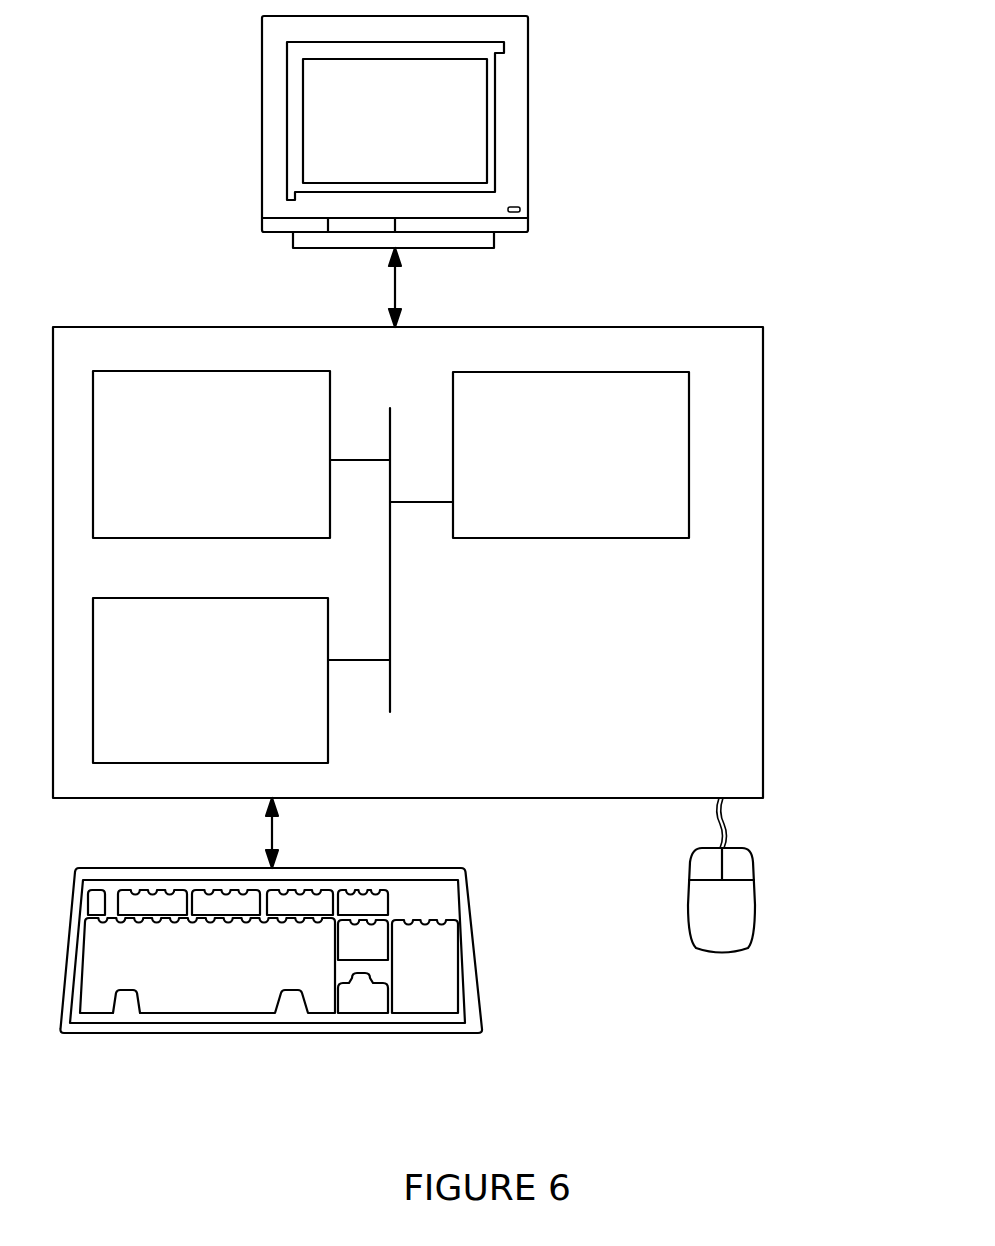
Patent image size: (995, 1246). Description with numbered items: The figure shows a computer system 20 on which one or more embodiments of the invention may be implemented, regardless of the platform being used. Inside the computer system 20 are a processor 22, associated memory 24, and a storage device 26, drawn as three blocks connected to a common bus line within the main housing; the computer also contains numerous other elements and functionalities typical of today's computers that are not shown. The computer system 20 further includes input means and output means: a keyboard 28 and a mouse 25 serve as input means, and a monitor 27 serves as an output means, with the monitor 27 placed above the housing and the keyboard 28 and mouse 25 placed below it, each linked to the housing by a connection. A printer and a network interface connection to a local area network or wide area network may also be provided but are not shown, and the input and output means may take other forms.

The computer system 20 is at (780, 183).
The processor 22 is at (578, 468).
The memory 24 is at (197, 466).
The storage device 26 is at (192, 696).
The monitor 27 is at (380, 137).
The keyboard 28 is at (183, 992).
The mouse 25 is at (705, 924).